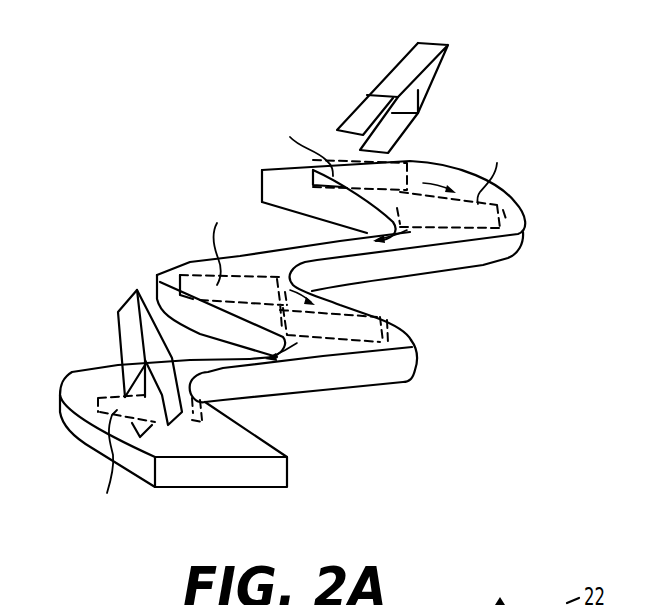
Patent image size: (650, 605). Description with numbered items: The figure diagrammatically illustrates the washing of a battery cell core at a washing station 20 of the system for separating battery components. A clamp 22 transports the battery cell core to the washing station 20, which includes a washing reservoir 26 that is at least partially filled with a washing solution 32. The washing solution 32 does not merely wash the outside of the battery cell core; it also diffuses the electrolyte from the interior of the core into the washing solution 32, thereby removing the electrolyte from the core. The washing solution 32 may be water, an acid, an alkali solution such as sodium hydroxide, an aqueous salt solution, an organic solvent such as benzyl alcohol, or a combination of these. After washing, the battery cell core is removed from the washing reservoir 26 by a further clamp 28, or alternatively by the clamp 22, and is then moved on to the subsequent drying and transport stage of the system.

The washing station 20 is at (149, 79).
The clamp 22 is at (418, 88).
The washing reservoir 26 is at (527, 232).
The further clamp 28 is at (130, 323).
The washing solution 32 is at (187, 437).